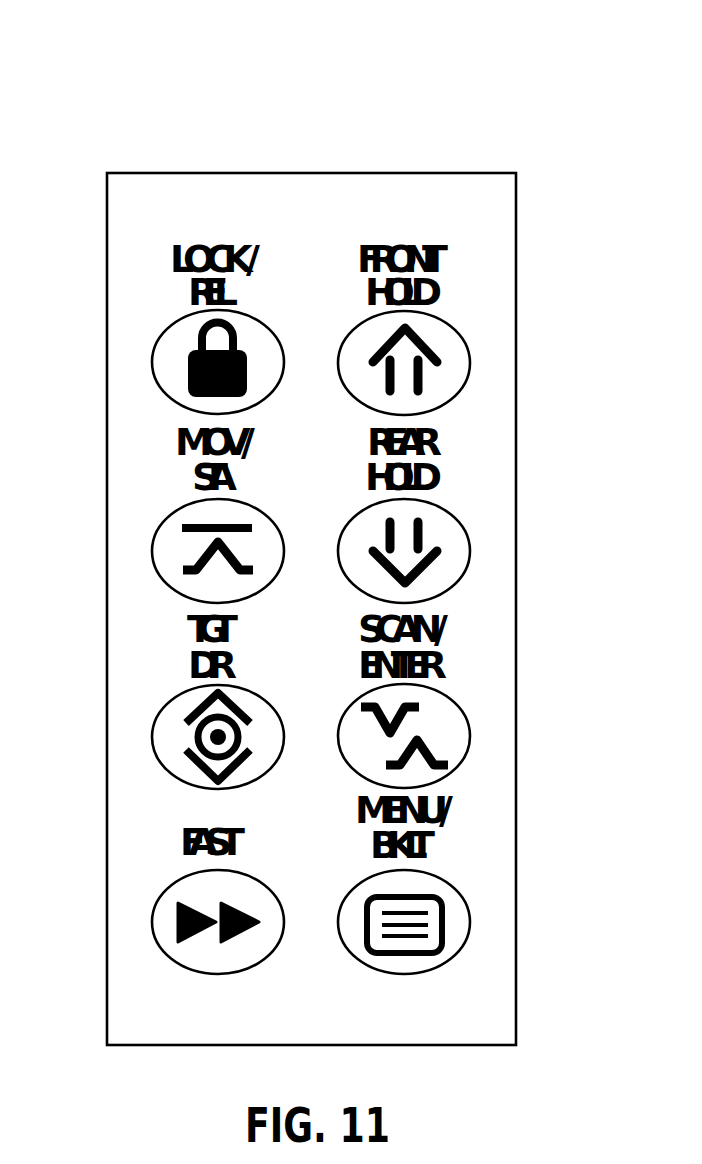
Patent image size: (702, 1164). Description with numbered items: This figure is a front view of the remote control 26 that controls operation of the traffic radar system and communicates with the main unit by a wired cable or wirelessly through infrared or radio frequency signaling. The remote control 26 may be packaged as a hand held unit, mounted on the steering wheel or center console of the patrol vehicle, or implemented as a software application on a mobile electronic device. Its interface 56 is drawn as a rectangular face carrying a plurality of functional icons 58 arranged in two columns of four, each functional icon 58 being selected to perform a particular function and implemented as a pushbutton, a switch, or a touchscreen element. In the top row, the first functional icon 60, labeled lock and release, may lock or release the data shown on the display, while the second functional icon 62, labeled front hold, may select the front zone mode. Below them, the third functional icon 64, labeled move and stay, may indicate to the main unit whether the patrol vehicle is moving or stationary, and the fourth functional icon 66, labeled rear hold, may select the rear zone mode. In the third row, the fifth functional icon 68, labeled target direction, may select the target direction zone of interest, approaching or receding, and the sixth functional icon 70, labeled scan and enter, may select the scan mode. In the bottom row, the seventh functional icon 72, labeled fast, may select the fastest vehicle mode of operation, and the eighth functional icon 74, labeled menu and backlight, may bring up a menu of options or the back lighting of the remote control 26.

The remote control 26 is at (298, 78).
The interface 56 is at (135, 192).
The functional icons 58 is at (311, 207).
The first functional icon 60 is at (162, 360).
The second functional icon 62 is at (458, 360).
The third functional icon 64 is at (162, 549).
The fourth functional icon 66 is at (458, 548).
The fifth functional icon 68 is at (162, 733).
The sixth functional icon 70 is at (458, 732).
The seventh functional icon 72 is at (162, 926).
The eighth functional icon 74 is at (458, 927).